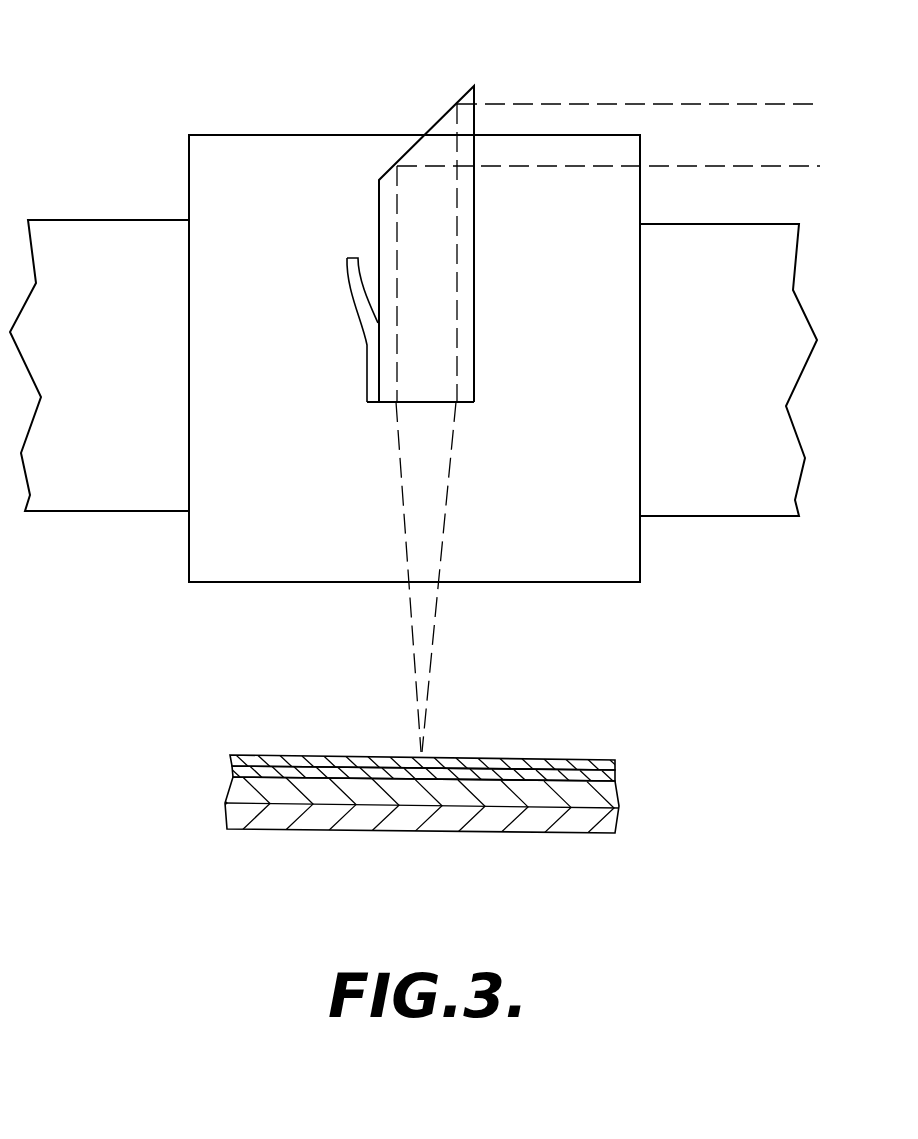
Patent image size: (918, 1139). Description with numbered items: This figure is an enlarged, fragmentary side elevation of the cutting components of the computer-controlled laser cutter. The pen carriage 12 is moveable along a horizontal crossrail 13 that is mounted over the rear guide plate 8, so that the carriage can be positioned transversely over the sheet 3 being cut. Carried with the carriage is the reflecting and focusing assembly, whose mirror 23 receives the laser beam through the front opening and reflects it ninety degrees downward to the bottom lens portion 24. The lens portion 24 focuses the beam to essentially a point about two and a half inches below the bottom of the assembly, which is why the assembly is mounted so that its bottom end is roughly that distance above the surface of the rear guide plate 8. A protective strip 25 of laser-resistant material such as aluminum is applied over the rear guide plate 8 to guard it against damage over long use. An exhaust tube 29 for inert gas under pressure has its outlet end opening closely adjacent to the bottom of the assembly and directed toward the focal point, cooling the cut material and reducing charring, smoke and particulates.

The sheet 3 is at (358, 757).
The rear guide plate 8 is at (553, 793).
The pen carriage 12 is at (597, 565).
The horizontal crossrail 13 is at (730, 500).
The mirror 23 is at (436, 120).
The bottom lens portion 24 is at (424, 403).
The protective strip 25 is at (298, 770).
The exhaust tube 29 is at (353, 298).